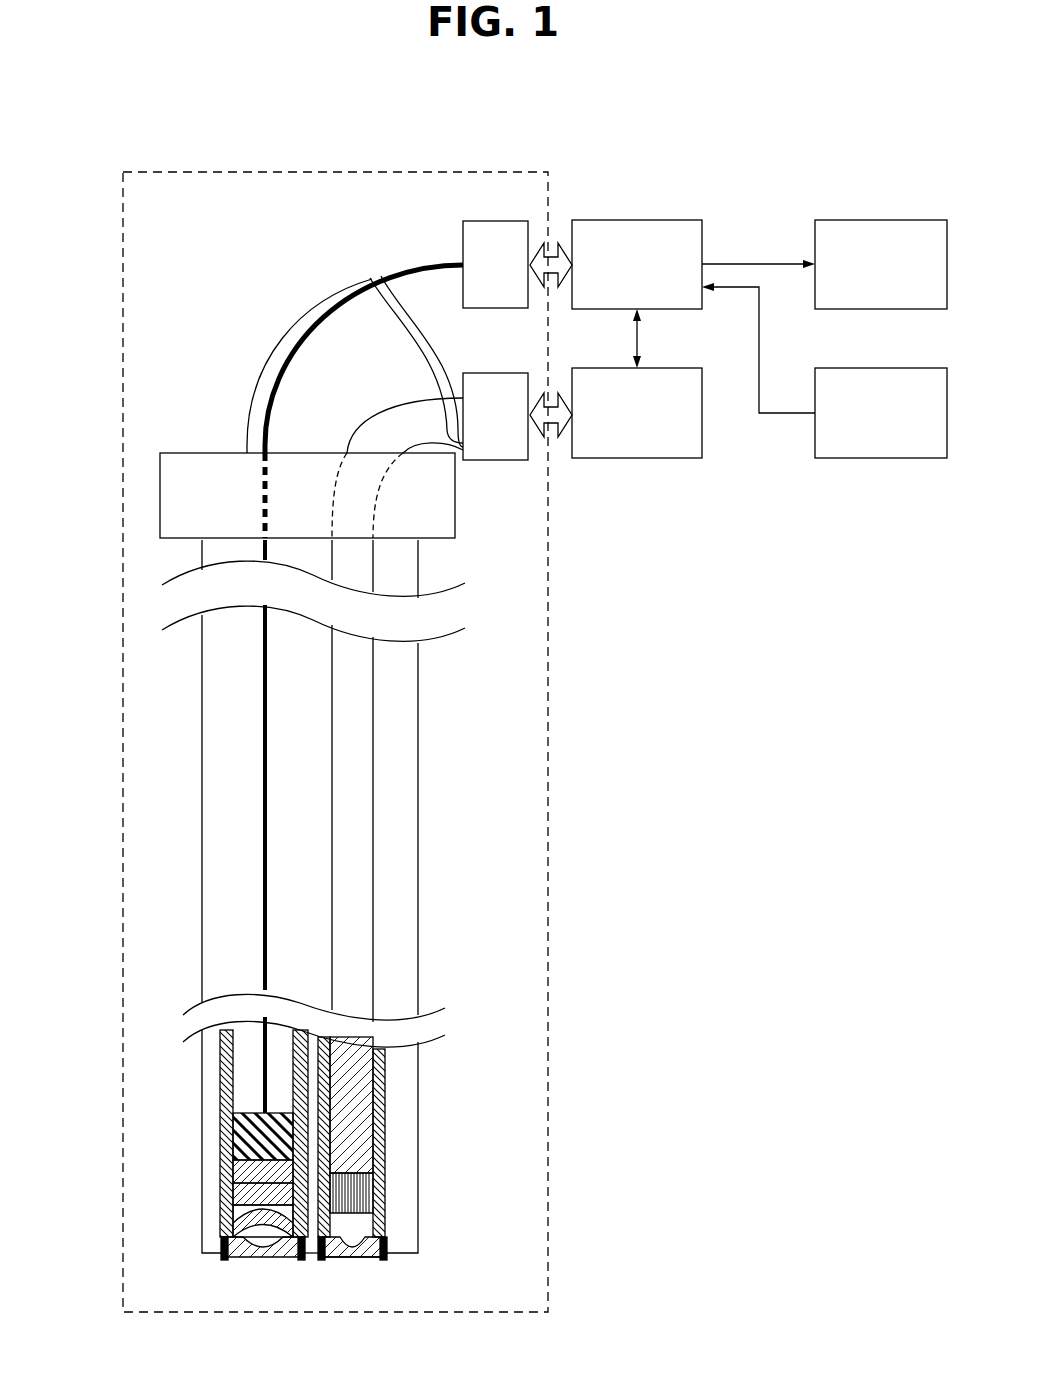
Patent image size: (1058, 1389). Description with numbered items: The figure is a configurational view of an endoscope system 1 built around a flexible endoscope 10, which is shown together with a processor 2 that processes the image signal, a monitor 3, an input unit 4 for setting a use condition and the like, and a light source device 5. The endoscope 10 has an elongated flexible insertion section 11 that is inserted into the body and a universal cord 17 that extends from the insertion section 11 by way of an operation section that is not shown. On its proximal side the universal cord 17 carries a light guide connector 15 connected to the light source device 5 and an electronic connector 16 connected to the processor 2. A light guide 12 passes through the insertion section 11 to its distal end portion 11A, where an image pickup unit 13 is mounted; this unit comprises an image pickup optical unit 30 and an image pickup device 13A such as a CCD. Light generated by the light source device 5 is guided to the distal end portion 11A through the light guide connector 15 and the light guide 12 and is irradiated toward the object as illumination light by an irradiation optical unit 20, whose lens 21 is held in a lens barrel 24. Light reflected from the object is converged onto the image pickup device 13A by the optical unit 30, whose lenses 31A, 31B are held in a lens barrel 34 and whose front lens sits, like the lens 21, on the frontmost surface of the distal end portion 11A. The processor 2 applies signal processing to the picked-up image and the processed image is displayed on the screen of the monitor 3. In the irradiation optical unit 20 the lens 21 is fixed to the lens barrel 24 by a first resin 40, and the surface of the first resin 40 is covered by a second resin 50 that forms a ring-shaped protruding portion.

The endoscope system 1 is at (782, 148).
The processor 2 is at (672, 220).
The monitor 3 is at (915, 220).
The input unit 4 is at (915, 368).
The light source device 5 is at (672, 368).
The endoscope 10 is at (550, 762).
The insertion section 11 is at (418, 808).
The distal end portion 11A is at (460, 1058).
The light guide 12 is at (373, 923).
The image pickup unit 13 is at (72, 1072).
The image pickup device 13A is at (238, 1113).
The light guide connector 15 is at (497, 460).
The electronic connector 16 is at (497, 221).
The universal cord 17 is at (300, 340).
The irradiation optical unit 20 is at (488, 1102).
The lens 21 is at (358, 1257).
The lens barrel 24 is at (385, 1127).
The image pickup optical unit 30 is at (140, 1122).
The lens 31A is at (233, 1217).
The lens 31B is at (233, 1178).
The lens barrel 34 is at (220, 1140).
The first resin 40 is at (385, 1200).
The second resin 50 is at (385, 1237).